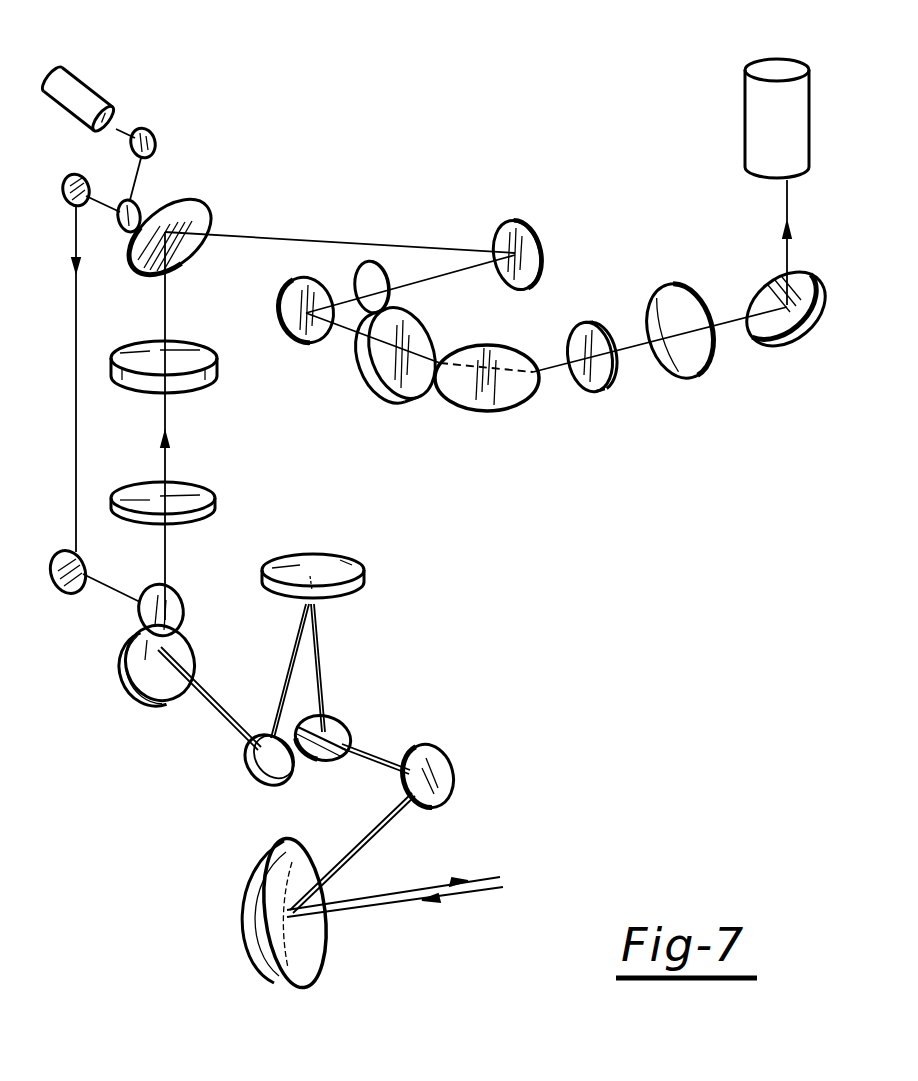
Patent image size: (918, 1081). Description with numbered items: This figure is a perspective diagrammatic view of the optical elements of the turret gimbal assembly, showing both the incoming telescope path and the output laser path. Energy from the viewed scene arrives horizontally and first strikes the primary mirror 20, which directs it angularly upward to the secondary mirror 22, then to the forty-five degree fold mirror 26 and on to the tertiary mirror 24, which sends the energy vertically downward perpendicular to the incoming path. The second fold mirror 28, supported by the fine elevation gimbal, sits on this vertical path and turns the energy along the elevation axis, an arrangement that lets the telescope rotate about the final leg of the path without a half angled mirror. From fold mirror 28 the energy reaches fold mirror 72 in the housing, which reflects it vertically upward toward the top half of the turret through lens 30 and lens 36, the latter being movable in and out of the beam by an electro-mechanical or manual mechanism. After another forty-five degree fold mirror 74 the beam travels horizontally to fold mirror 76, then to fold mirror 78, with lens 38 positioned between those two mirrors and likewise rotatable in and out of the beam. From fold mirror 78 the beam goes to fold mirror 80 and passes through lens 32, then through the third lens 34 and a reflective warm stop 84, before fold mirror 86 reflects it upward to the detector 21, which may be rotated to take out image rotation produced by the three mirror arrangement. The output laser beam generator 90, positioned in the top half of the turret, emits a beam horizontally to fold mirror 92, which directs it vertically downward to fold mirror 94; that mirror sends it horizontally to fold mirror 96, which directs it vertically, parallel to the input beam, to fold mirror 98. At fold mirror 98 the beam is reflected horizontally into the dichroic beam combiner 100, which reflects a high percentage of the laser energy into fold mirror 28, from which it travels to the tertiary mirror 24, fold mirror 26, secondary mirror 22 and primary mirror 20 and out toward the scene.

The primary mirror 20 is at (310, 964).
The detector 21 is at (788, 120).
The secondary mirror 22 is at (458, 770).
The tertiary mirror 24 is at (368, 571).
The 45° fold mirror 26 is at (333, 766).
The second fold mirror 28 is at (256, 781).
The lens 30 is at (193, 388).
The lens 32 is at (395, 403).
The third lens 34 is at (591, 393).
The lens 36 is at (214, 503).
The lens 38 is at (383, 264).
The fold mirror 72 is at (158, 702).
The 45° fold mirror 74 is at (185, 243).
The fold mirror 76 is at (532, 238).
The fold mirror 78 is at (306, 344).
The fold mirror 80 is at (500, 412).
The reflective warm stop 84 is at (685, 382).
The fold mirror 86 is at (789, 351).
The output laser beam generator 90 is at (90, 92).
The fold mirror 92 is at (157, 136).
The fold mirror 94 is at (127, 231).
The fold mirror 96 is at (64, 196).
The fold mirror 98 is at (62, 597).
The dichroic beam combiner 100 is at (180, 600).